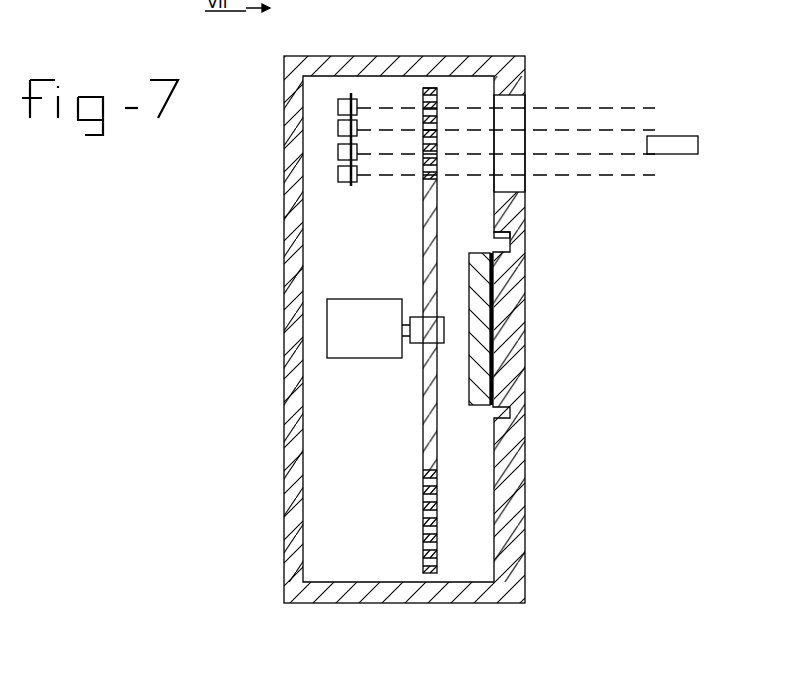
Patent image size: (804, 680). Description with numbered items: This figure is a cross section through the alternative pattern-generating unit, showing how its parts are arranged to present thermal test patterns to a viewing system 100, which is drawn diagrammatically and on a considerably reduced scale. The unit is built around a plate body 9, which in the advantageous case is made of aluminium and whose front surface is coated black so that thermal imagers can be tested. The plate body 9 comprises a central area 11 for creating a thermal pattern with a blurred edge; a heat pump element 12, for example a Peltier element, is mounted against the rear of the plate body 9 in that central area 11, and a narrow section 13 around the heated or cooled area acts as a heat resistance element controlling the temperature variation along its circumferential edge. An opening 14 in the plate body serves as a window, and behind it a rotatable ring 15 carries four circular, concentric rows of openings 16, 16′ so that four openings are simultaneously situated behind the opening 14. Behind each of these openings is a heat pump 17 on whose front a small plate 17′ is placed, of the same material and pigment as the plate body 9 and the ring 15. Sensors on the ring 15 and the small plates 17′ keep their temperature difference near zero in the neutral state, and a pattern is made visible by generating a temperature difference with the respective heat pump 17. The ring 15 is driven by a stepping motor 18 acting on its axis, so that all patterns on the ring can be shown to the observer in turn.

The plate body 9 is at (508, 566).
The central area 11 is at (510, 340).
The heat pump element 12 is at (492, 393).
The narrow section 13 is at (515, 246).
The opening 14 is at (515, 118).
The ring 15 is at (436, 452).
The openings 16 is at (480, 291).
The openings 16′ is at (437, 130).
The heat pump 17 is at (338, 174).
The small plate 17′ is at (357, 107).
The stepping motor 18 is at (340, 325).
The viewing system 100 is at (673, 148).